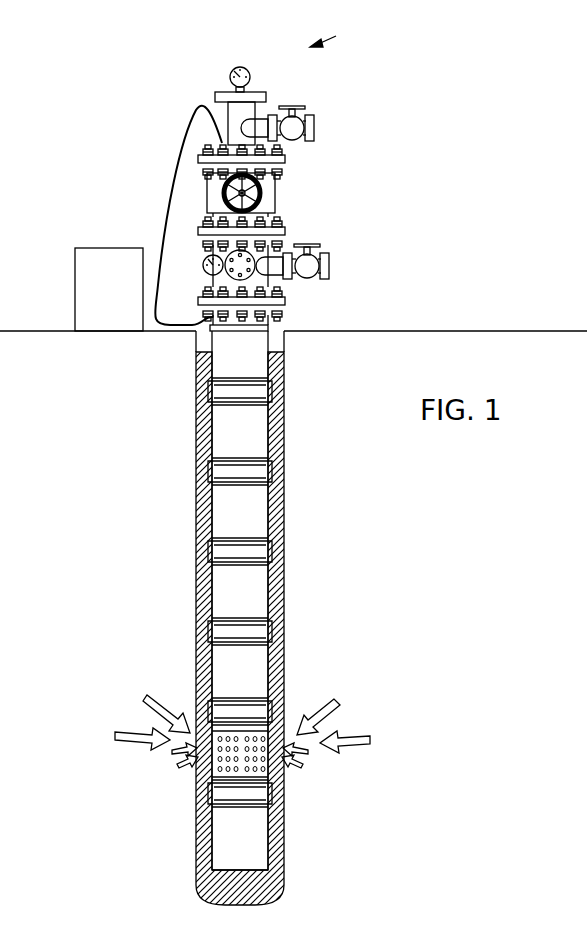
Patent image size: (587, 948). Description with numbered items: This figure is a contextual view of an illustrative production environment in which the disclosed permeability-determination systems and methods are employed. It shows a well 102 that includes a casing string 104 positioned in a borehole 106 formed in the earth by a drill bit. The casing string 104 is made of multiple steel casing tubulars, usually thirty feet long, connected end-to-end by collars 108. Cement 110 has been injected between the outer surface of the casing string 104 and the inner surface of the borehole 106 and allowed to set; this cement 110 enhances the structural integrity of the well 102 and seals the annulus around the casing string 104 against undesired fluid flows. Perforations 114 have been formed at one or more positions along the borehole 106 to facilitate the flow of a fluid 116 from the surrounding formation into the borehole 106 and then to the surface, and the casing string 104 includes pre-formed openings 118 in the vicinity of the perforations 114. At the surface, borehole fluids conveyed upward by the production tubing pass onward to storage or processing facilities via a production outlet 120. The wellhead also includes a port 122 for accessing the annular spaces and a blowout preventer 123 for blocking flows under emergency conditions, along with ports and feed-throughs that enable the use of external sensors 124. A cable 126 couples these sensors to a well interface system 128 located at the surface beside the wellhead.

The well 102 is at (343, 33).
The casing string 104 is at (285, 368).
The borehole 106 is at (197, 339).
The collars 108 is at (268, 399).
The cement 110 is at (203, 433).
The perforations 114 is at (279, 750).
The fluid 116 is at (245, 731).
The pre-formed openings 118 is at (273, 781).
The production outlet 120 is at (303, 108).
The port 122 is at (303, 248).
The blowout preventer 123 is at (276, 197).
The external sensors 124 is at (232, 75).
The cable 126 is at (181, 143).
The well interface system 128 is at (75, 299).